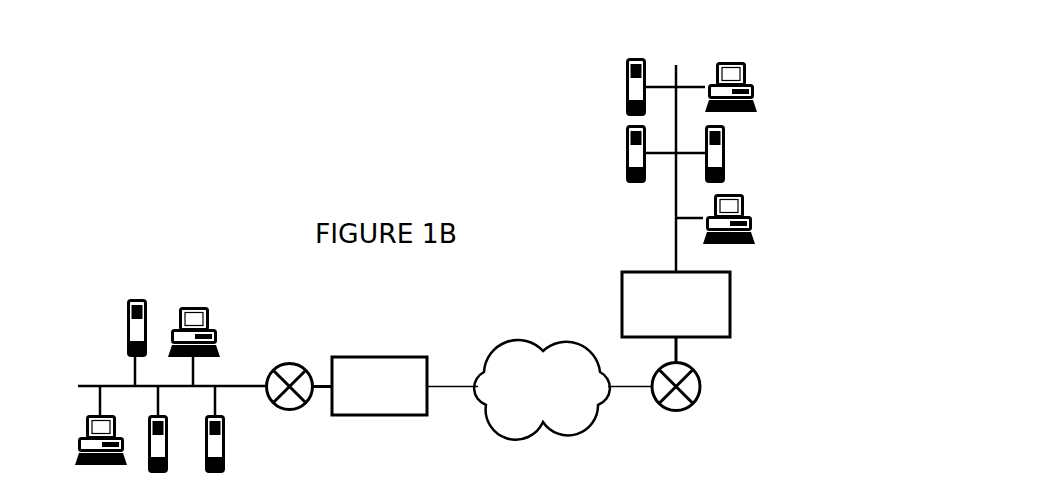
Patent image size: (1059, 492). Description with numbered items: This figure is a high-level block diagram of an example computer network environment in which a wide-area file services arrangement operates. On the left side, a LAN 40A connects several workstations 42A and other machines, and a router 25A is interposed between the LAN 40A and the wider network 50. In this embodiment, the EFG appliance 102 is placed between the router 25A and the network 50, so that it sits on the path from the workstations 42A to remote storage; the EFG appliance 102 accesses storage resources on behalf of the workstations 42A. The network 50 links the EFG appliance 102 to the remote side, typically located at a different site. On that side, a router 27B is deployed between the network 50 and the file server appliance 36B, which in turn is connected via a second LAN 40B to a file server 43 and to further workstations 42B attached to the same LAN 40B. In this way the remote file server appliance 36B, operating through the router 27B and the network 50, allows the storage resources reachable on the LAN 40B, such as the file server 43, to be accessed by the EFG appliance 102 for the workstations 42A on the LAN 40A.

The LAN 40A is at (73, 370).
The workstation 42A is at (193, 305).
The router 25A is at (289, 363).
The EFG appliance 102 is at (403, 415).
The network 50 is at (575, 432).
The router 27B is at (701, 387).
The file server appliance 36B is at (622, 303).
The LAN 40B is at (677, 43).
The file server 43 is at (614, 97).
The workstation 42B is at (752, 88).